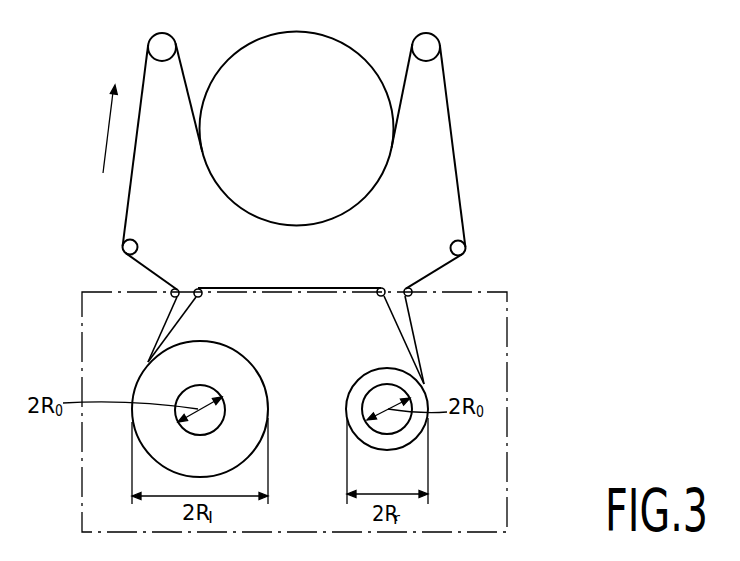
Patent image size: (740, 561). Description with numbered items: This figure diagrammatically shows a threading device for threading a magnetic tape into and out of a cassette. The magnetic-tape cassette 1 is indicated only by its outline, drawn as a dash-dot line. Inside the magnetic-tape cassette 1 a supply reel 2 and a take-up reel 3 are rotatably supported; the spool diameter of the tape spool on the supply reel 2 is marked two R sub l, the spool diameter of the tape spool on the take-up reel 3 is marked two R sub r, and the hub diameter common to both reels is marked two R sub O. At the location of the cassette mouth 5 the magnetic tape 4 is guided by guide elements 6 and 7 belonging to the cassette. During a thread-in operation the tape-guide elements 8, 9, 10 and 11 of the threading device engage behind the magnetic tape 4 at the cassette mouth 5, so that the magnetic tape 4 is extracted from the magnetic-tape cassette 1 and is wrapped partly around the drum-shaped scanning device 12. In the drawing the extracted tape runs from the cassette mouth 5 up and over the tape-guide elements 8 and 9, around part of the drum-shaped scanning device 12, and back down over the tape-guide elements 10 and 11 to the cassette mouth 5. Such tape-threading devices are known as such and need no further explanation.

The magnetic-tape cassette 1 is at (510, 421).
The supply reel 2 is at (241, 352).
The take-up reel 3 is at (365, 373).
The magnetic tape 4 is at (350, 286).
The cassette mouth 5 is at (301, 268).
The guide element 6 is at (197, 288).
The guide element 7 is at (385, 288).
The tape-guide element 8 is at (122, 250).
The tape-guide element 9 is at (150, 42).
The tape-guide element 10 is at (428, 47).
The tape-guide element 11 is at (466, 249).
The drum-shaped scanning device 12 is at (356, 73).